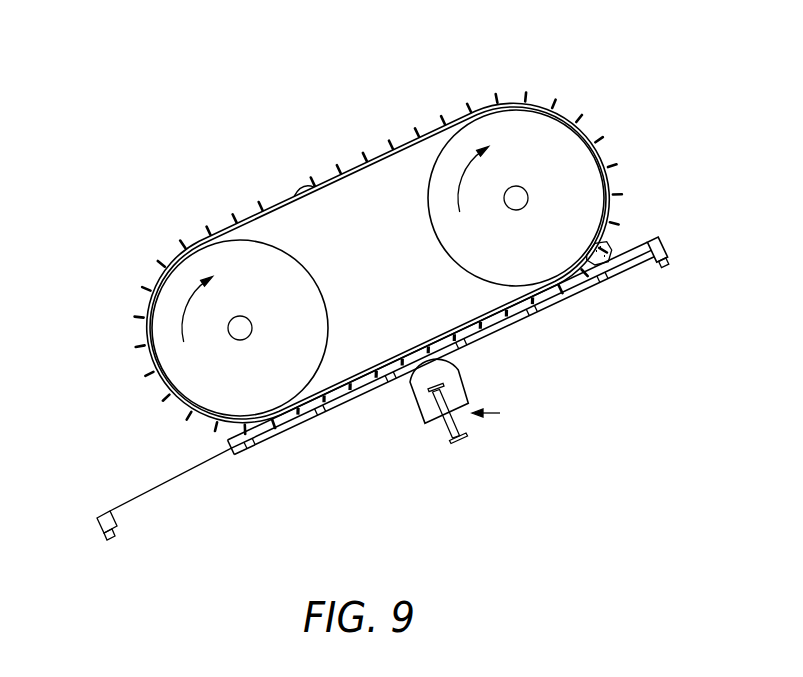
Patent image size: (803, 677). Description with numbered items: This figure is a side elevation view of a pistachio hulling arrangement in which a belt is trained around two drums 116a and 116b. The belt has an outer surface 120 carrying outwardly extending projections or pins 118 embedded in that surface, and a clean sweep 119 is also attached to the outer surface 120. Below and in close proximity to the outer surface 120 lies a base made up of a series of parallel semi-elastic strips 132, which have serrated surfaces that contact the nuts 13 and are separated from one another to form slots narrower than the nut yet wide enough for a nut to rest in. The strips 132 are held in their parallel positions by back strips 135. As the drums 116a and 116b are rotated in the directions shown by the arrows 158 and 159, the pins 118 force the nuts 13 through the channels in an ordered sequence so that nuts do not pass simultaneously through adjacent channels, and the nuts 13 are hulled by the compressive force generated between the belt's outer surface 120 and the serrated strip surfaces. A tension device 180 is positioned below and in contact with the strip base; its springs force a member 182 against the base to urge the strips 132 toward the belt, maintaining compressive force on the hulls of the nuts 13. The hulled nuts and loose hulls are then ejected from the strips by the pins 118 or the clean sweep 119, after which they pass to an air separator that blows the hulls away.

The drum 116a is at (174, 284).
The drum 116b is at (492, 122).
The projections (pins) 118 is at (185, 242).
The clean sweep 119 is at (297, 190).
The outer surface of belt 120 is at (377, 150).
The arrow (direction of rotation) 158 is at (458, 201).
The arrow (direction of rotation) 159 is at (183, 330).
The nuts 13 is at (614, 238).
The strips 132 is at (362, 386).
The back strips 135 is at (238, 451).
The member 182 is at (465, 382).
The tension device 180 is at (507, 412).